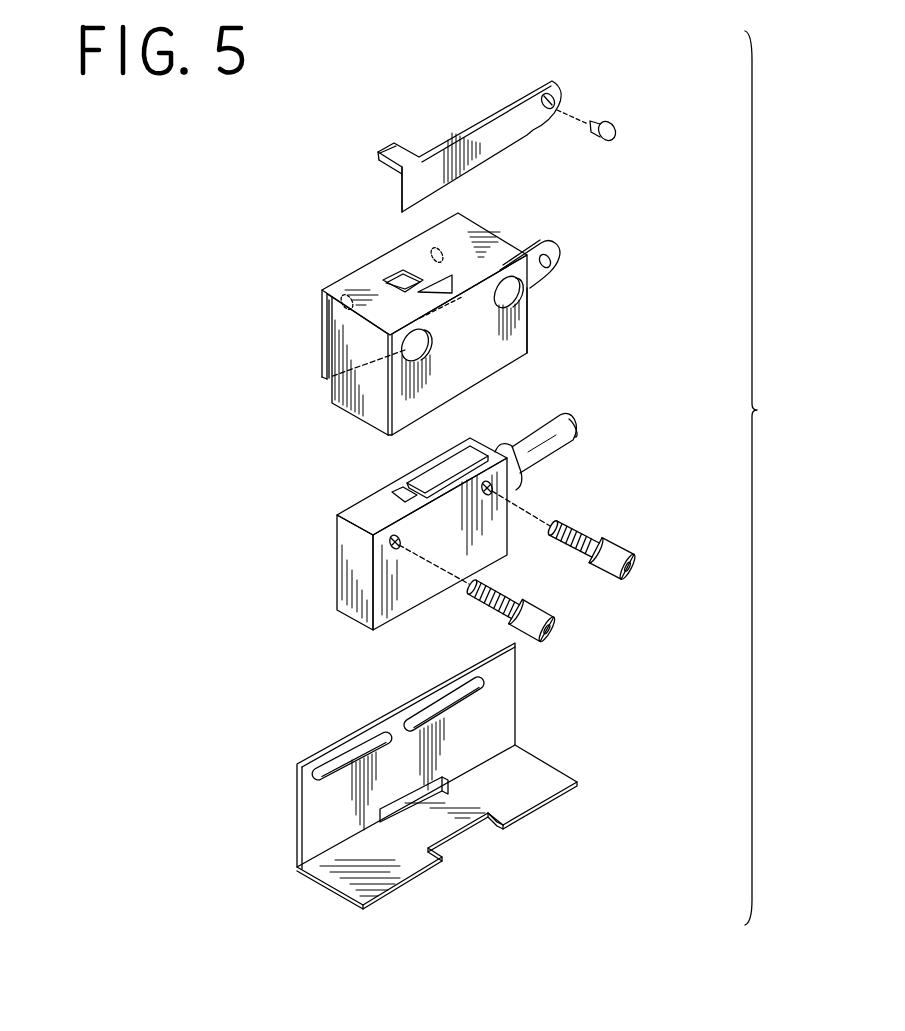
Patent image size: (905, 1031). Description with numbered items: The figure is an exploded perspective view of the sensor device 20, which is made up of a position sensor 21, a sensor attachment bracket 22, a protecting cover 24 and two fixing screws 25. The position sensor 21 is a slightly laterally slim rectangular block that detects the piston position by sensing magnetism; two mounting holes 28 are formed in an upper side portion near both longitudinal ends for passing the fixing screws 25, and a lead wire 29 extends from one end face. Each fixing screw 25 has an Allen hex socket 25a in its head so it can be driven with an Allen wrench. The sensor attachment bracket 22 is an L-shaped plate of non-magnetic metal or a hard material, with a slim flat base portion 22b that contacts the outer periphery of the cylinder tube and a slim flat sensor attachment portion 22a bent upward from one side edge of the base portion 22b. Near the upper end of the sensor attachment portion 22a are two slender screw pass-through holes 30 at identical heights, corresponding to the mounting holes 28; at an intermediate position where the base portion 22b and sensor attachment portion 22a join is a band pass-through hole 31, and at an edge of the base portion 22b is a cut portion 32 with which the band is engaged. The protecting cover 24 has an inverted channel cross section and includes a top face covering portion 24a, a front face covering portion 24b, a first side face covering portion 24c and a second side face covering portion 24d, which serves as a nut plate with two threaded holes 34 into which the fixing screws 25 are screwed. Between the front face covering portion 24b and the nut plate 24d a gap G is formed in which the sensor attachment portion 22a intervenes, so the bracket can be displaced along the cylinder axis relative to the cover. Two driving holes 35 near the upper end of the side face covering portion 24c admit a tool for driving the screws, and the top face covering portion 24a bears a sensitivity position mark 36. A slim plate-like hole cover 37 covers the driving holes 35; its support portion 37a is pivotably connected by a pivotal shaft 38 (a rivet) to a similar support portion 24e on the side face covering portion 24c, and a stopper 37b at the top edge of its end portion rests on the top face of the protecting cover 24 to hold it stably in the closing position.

The sensor device 20 is at (796, 425).
The position sensor 21 is at (350, 580).
The sensor attachment bracket 22 is at (399, 776).
The sensor attachment portion 22a is at (312, 826).
The base portion 22b is at (330, 877).
The protecting cover 24 is at (438, 311).
The top face covering portion 24a is at (493, 247).
The front face covering portion 24b is at (332, 392).
The first side face covering portion 24c is at (528, 347).
The second side face covering portion 24d is at (322, 306).
The support portion 24e is at (556, 254).
The fixing screw 25 is at (589, 530).
The Allen hex socket 25a is at (630, 566).
The mounting hole 28 is at (489, 481).
The lead wire 29 is at (558, 449).
The screw pass-through hole 30 is at (342, 762).
The band pass-through hole 31 is at (405, 812).
The cut portion 32 is at (498, 823).
The threaded hole 34 is at (345, 300).
The driving hole 35 is at (415, 356).
The sensitivity position mark 36 is at (432, 272).
The hole cover 37 is at (458, 141).
The support portion 37a is at (553, 88).
The stopper 37b is at (391, 150).
The pivotal shaft 38 is at (614, 125).
The gap G is at (327, 347).